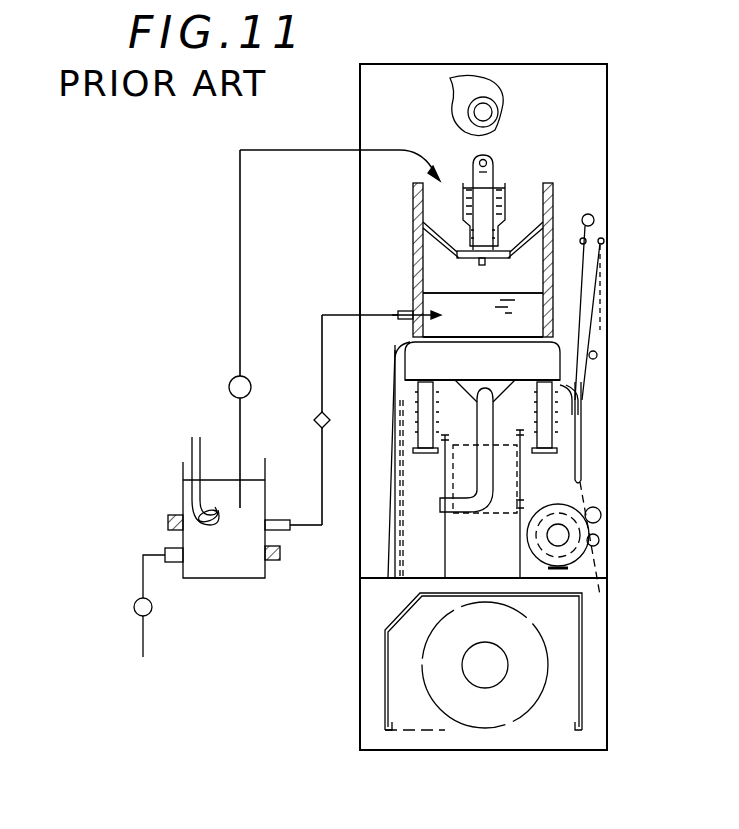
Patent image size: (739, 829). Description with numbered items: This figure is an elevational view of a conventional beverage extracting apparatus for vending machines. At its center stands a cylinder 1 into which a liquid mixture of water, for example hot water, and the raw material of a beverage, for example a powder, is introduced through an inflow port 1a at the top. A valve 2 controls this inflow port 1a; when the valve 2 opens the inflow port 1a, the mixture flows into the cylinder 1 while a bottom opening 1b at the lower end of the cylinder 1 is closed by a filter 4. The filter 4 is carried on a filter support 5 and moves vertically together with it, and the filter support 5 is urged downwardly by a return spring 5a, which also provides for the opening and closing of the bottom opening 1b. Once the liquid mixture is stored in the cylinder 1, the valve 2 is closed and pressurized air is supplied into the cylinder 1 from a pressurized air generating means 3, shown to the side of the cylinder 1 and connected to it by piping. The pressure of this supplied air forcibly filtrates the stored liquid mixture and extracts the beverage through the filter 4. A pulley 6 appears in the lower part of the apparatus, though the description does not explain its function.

The cylinder 1 is at (413, 242).
The inflow port 1a is at (505, 238).
The bottom opening 1b is at (470, 330).
The valve 2 is at (510, 270).
The pressurized air generating means 3 is at (152, 612).
The filter 4 is at (388, 450).
The filter support 5 is at (550, 355).
The return spring 5a is at (555, 415).
The pulley 6 is at (528, 480).